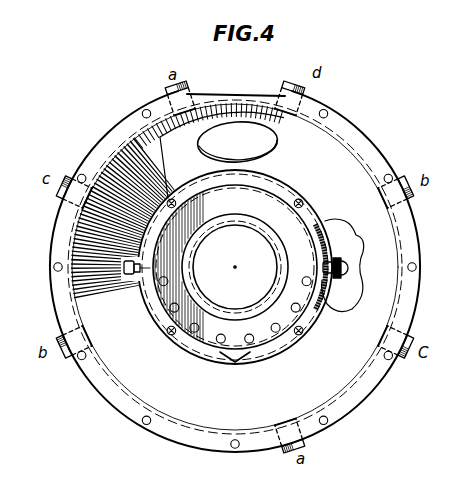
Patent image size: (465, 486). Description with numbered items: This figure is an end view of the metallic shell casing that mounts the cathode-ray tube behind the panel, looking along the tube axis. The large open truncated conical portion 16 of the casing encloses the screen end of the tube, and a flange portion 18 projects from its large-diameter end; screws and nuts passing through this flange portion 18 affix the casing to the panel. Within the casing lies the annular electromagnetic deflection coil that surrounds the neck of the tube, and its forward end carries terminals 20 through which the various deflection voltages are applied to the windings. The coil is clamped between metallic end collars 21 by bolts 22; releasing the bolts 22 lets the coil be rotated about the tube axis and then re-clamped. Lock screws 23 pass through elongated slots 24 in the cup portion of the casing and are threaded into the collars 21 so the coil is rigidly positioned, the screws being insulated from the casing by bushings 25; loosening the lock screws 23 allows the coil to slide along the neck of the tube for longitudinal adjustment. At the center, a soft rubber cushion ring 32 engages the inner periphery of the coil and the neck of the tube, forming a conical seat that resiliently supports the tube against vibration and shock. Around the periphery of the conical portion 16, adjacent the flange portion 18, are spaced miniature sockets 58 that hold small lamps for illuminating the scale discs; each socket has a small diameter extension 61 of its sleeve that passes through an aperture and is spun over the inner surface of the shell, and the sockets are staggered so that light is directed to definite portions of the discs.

The truncated conical portion 16 is at (327, 145).
The flange portion 18 is at (410, 240).
The terminals 20 is at (235, 362).
The end collars 21 is at (287, 193).
The bolts 22 is at (172, 335).
The lock screws 23 is at (126, 275).
The elongated slots 24 is at (327, 251).
The bushings 25 is at (136, 281).
The cushion ring 32 is at (213, 224).
The miniature sockets 58 is at (188, 87).
The small diameter extension 61 is at (288, 418).